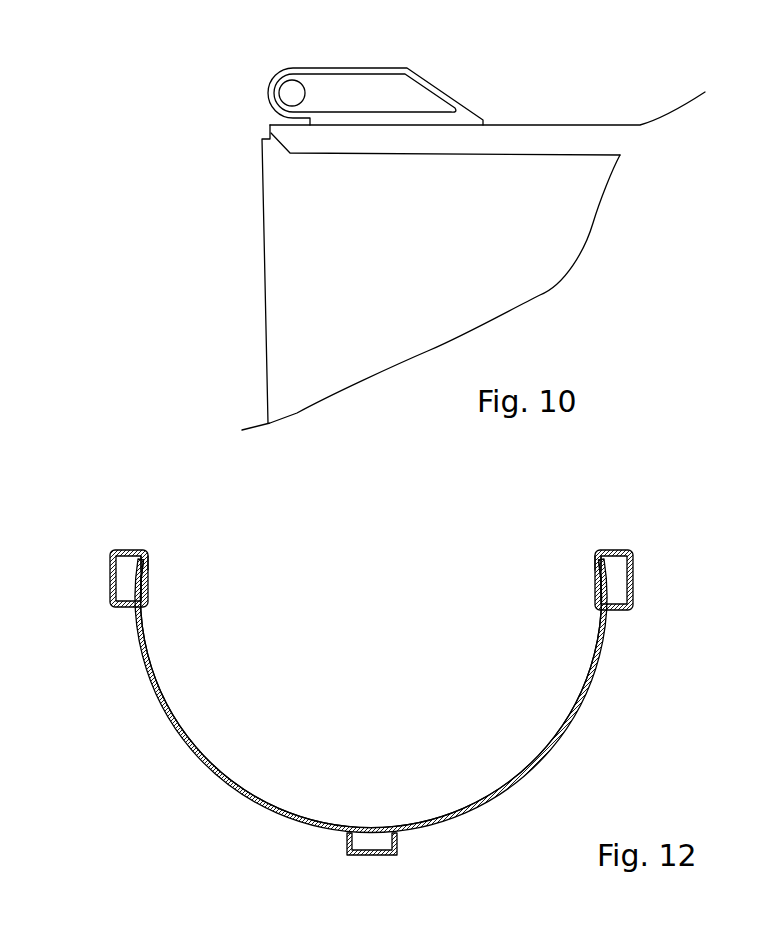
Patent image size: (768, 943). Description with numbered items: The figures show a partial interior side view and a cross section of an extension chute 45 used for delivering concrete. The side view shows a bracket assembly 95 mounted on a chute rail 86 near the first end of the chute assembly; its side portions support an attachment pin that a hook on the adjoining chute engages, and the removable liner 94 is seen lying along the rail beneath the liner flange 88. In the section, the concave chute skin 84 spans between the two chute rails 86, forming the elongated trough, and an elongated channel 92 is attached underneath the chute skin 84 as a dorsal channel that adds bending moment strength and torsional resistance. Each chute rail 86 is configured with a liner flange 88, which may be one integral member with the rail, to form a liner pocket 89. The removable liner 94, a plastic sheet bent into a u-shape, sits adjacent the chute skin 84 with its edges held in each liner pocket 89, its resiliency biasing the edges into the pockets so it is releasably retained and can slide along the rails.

In FIG. 10, the bracket assembly 95 is at (267, 58).
In FIG. 10, the liner flange 88 is at (493, 138).
In FIG. 12, the liner flange 88 is at (147, 558).
In FIG. 10, the removable liner 94 is at (313, 207).
In FIG. 12, the removable liner 94 is at (487, 795).
In FIG. 12, the chute rail 86 is at (120, 550).
In FIG. 12, the liner pocket 89 is at (145, 585).
In FIG. 12, the extension chute 45 is at (413, 694).
In FIG. 12, the chute skin 84 is at (533, 770).
In FIG. 12, the elongated channel 92 is at (365, 857).